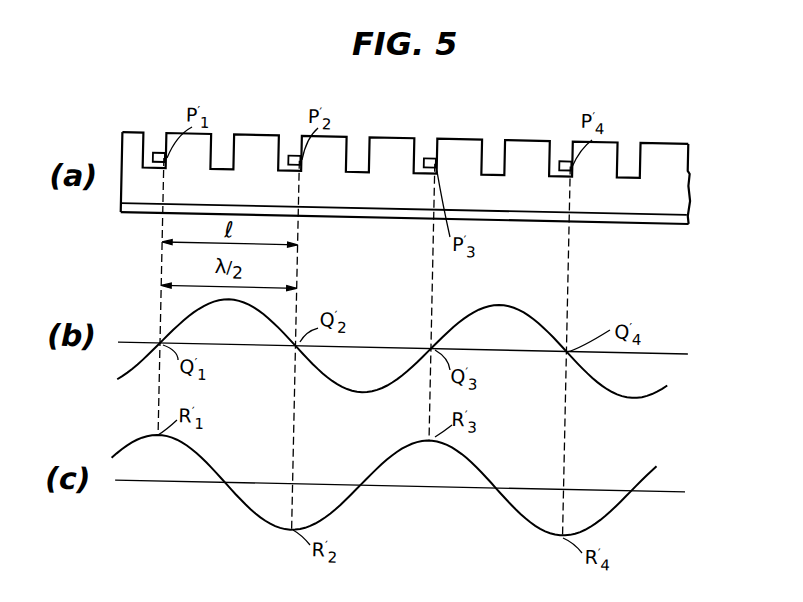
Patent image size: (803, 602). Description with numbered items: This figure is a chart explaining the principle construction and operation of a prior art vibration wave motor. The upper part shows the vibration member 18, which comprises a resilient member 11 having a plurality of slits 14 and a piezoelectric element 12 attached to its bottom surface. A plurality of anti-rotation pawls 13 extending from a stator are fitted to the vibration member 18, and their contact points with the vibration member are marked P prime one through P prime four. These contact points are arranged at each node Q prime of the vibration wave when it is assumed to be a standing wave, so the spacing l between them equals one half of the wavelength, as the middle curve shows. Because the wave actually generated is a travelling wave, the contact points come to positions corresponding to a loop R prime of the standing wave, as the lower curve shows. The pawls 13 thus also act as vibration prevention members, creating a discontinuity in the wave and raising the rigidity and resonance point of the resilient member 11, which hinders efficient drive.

The resilient member 11 is at (682, 179).
The piezoelectric element 12 is at (685, 212).
The anti-rotation pawls 13 is at (158, 150).
The slits 14 is at (148, 142).
The vibration member 18 is at (444, 159).